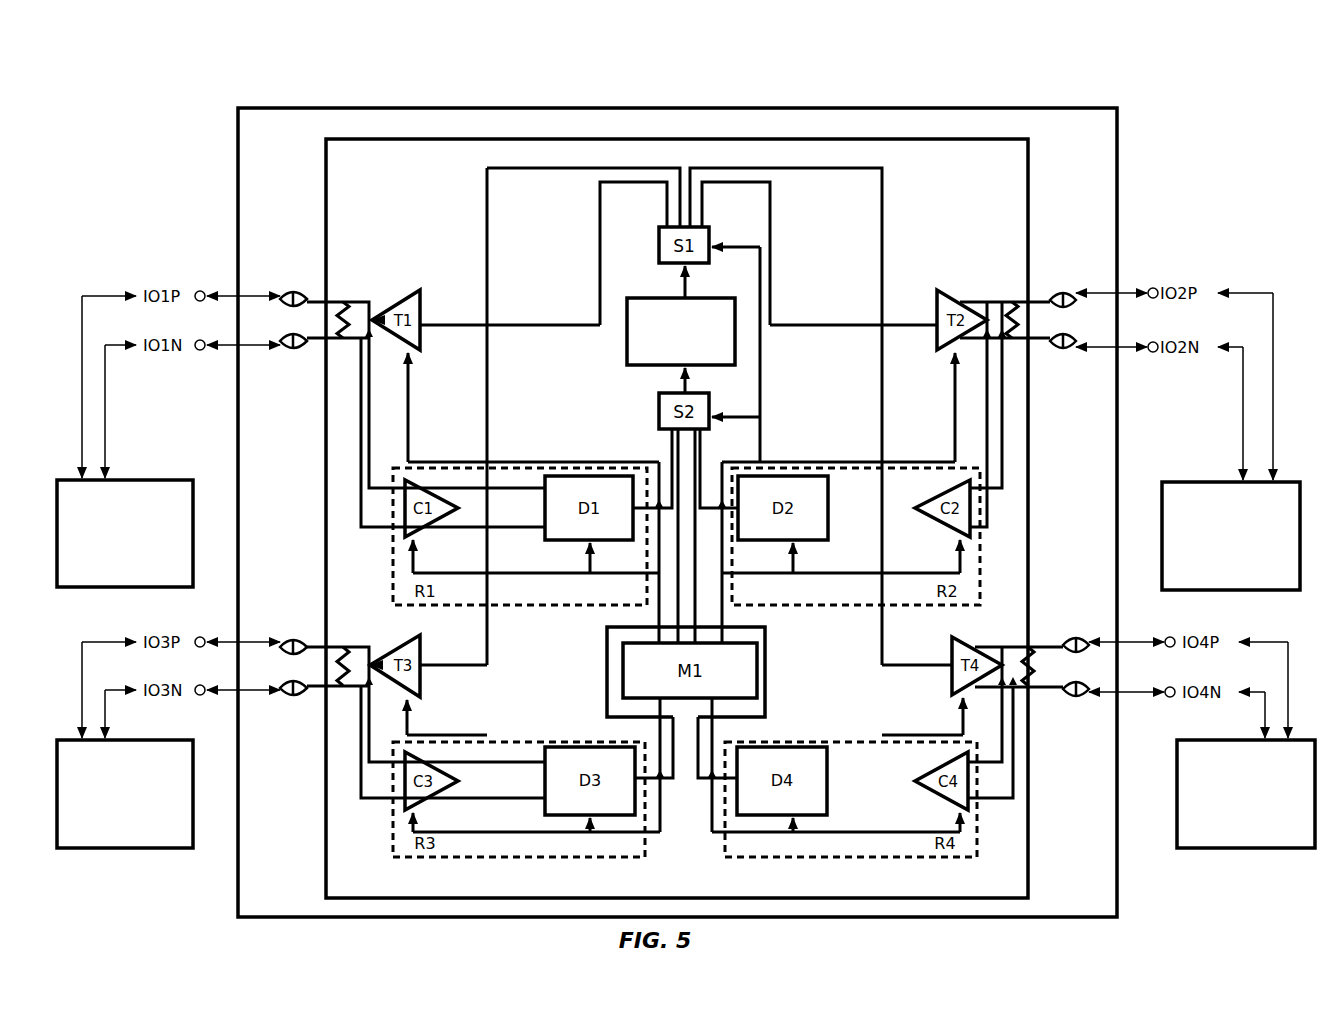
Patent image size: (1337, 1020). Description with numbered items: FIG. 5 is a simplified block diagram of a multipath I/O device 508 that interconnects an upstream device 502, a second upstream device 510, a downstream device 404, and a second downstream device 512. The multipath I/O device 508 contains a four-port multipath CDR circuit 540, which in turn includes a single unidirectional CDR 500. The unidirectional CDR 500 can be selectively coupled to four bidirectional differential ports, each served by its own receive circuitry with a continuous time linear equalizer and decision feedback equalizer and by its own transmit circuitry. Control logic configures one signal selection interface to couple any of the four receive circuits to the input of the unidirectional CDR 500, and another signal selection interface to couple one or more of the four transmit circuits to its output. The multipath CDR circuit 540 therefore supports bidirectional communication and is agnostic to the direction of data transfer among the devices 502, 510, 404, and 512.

The multipath I/O device 508 is at (237, 104).
The unidirectional CDR 500 is at (681, 331).
The multipath CDR circuit 540 is at (677, 518).
The upstream device 502 is at (125, 441).
The upstream device 510 is at (125, 745).
The downstream device 404 is at (1231, 441).
The downstream device 512 is at (1246, 745).